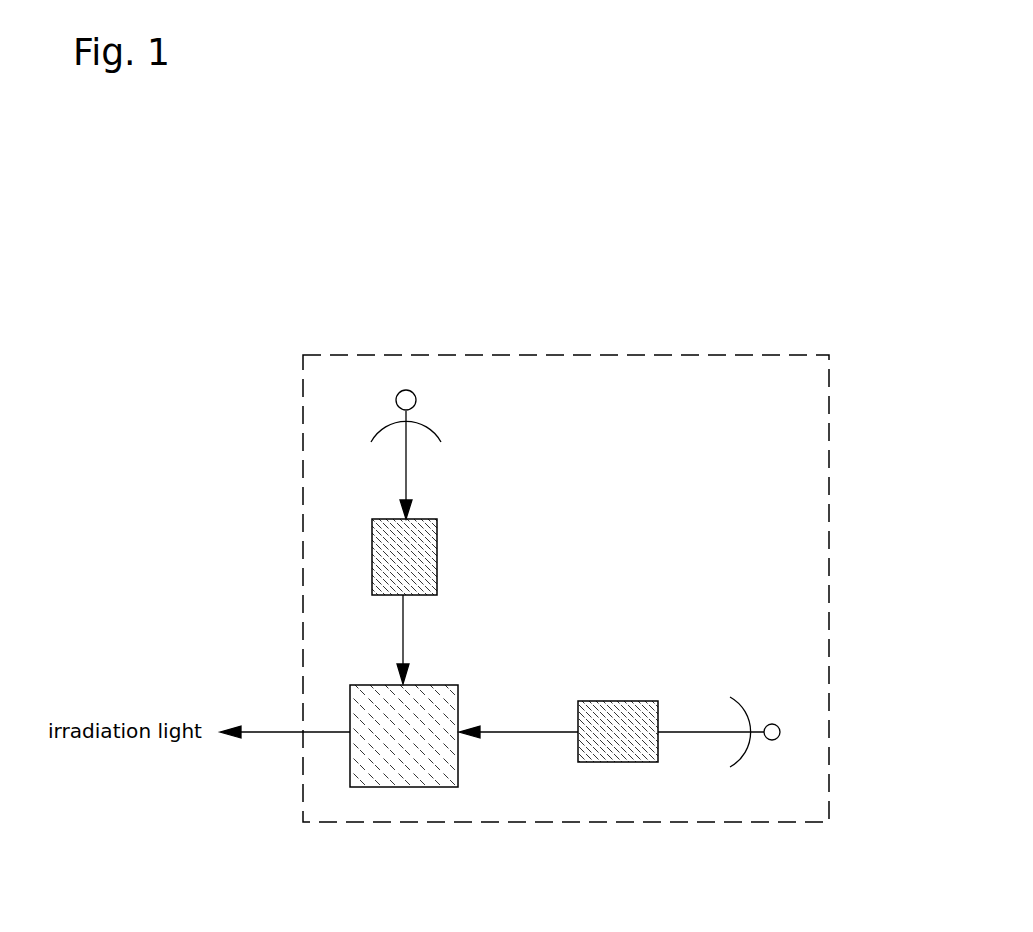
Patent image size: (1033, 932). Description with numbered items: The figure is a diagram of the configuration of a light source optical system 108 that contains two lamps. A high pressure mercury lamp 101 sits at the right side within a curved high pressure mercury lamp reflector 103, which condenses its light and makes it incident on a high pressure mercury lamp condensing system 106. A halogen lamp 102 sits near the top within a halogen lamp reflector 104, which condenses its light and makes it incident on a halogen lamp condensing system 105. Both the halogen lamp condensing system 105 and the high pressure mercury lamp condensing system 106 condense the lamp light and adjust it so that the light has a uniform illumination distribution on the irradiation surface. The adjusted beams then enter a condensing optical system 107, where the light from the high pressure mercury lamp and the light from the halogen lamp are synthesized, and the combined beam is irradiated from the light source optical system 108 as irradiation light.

The high pressure mercury lamp 101 is at (763, 742).
The halogen lamp 102 is at (411, 392).
The high pressure mercury lamp reflector 103 is at (787, 717).
The halogen lamp reflector 104 is at (438, 412).
The halogen lamp condensing system 105 is at (437, 545).
The high pressure mercury lamp condensing system 106 is at (590, 762).
The condensing optical system 107 is at (397, 787).
The light source optical system 108 is at (676, 355).